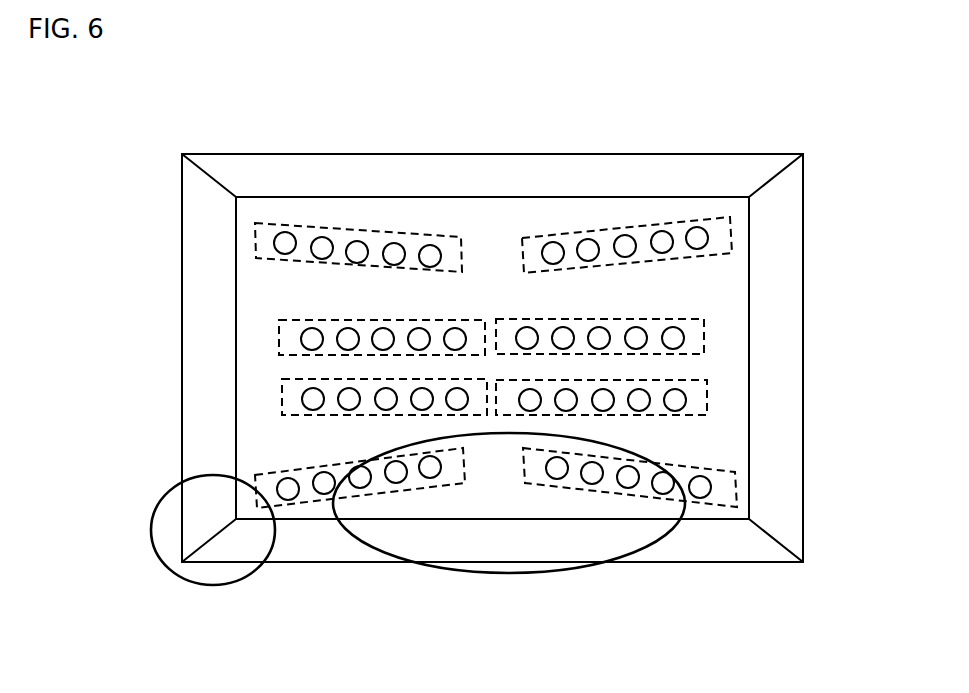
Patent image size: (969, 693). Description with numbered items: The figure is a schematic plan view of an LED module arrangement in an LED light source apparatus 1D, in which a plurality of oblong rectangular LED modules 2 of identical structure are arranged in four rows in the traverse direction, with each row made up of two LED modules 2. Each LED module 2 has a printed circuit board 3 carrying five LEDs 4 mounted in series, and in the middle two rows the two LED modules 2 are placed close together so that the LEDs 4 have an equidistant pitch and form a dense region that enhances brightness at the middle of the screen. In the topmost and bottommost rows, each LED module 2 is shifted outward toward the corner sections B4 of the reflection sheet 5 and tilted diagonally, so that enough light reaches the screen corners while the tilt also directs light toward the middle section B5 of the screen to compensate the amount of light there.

The LED light source apparatus 1D is at (490, 137).
The LED module 2 is at (365, 213).
The printed circuit board 3 is at (255, 241).
The LED 4 is at (284, 232).
The reflection sheet 5 is at (662, 153).
The corner section B4 is at (158, 553).
The middle section B5 is at (502, 574).